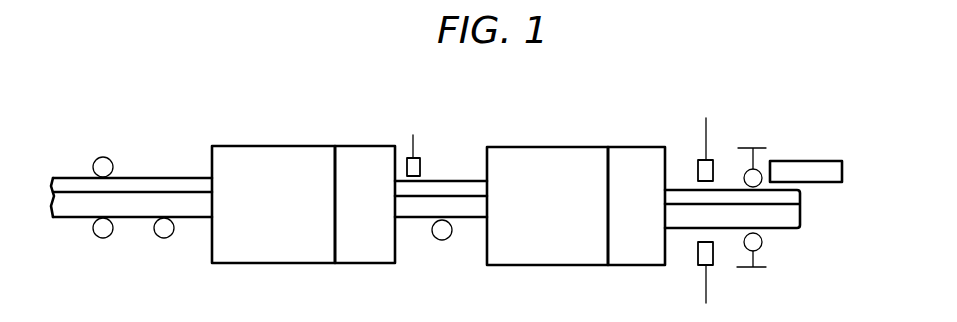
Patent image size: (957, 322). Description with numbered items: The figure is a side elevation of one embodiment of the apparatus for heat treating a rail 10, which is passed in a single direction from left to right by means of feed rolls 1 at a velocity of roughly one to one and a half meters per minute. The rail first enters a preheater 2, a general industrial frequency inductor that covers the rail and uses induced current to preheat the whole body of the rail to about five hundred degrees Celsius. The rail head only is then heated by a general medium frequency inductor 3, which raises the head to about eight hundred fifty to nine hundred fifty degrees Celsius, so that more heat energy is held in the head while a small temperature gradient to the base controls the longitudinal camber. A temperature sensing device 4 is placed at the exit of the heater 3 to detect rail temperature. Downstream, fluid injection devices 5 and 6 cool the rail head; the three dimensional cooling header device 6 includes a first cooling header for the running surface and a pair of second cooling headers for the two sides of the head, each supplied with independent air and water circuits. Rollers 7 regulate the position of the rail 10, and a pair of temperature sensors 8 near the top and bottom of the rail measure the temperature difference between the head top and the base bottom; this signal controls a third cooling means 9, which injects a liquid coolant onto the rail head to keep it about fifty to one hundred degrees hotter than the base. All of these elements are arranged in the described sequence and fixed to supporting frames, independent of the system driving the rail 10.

The feed rolls 1 is at (103, 238).
The preheater 2 is at (268, 160).
The medium frequency inductor 3 is at (358, 158).
The temperature sensing device 4 is at (419, 164).
The fluid injection device 5 is at (541, 163).
The three dimensional cooling header device 6 is at (647, 248).
The rollers 7 is at (745, 176).
The temperature sensors 8 is at (699, 169).
The third cooling means 9 is at (808, 172).
The rail 10 is at (780, 213).